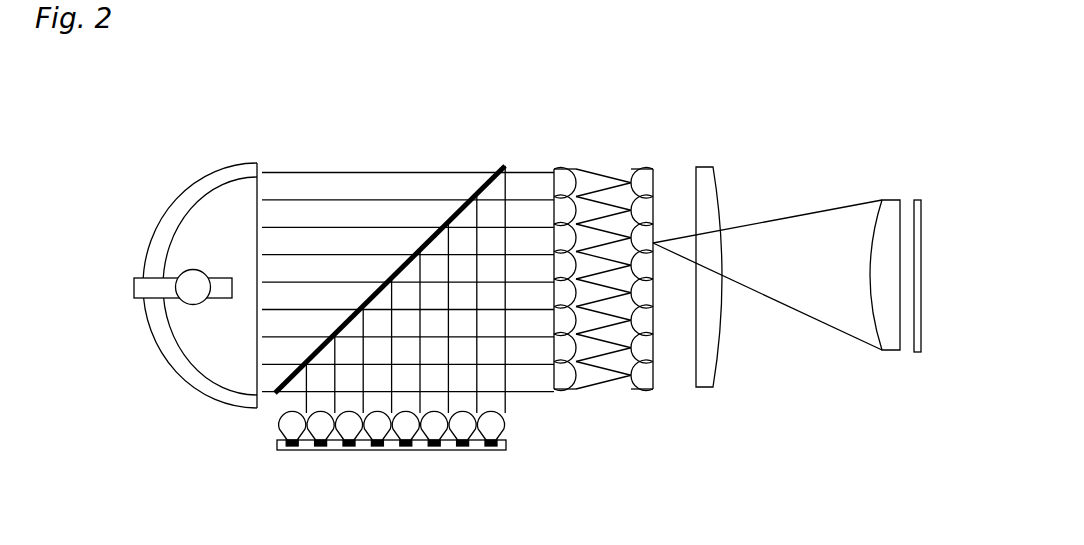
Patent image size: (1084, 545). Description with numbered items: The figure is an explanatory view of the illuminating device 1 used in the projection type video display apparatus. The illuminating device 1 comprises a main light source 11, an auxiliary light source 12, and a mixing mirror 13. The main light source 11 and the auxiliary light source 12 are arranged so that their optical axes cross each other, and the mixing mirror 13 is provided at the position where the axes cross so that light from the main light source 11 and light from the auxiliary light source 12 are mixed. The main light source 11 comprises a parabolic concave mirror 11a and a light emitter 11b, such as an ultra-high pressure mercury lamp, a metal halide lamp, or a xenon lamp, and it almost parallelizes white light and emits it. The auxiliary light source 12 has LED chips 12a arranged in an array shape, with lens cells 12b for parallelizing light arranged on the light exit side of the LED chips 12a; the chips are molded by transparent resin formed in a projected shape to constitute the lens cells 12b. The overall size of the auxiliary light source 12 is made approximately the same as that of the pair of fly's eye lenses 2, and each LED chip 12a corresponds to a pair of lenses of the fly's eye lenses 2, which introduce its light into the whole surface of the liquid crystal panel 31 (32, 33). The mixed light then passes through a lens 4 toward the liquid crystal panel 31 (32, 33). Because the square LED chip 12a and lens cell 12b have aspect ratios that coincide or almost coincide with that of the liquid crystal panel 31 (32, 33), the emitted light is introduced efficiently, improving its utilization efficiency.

The illuminating device 1 is at (420, 110).
The main light source 11 is at (203, 160).
The parabolic concave mirror 11a is at (169, 217).
The light emitter 11b is at (192, 302).
The auxiliary light source 12 is at (534, 434).
The LED chip 12a is at (292, 450).
The lens cell 12b is at (283, 425).
The mixing mirror 13 is at (500, 166).
The pair of fly's eye lenses 2 is at (656, 165).
The condenser lens 4 is at (703, 167).
The liquid crystal panel 31 is at (917, 200).
The liquid crystal panel 32 is at (885, 275).
The liquid crystal panel 33 is at (917, 276).